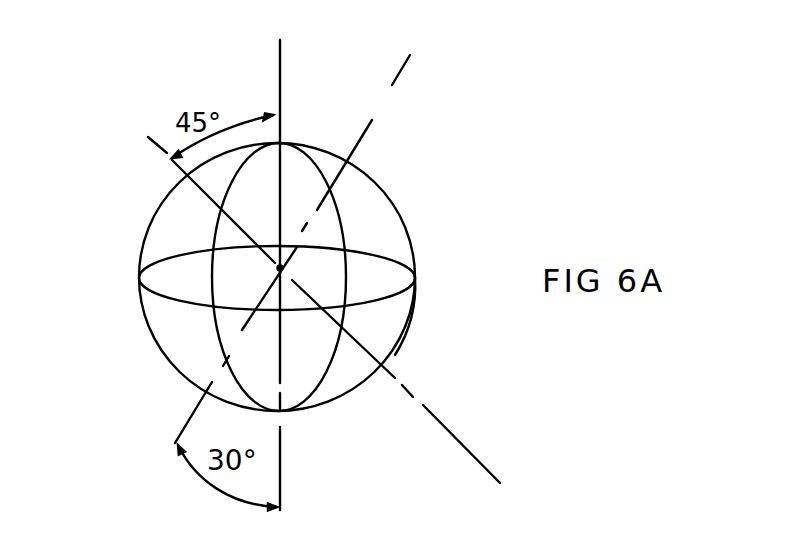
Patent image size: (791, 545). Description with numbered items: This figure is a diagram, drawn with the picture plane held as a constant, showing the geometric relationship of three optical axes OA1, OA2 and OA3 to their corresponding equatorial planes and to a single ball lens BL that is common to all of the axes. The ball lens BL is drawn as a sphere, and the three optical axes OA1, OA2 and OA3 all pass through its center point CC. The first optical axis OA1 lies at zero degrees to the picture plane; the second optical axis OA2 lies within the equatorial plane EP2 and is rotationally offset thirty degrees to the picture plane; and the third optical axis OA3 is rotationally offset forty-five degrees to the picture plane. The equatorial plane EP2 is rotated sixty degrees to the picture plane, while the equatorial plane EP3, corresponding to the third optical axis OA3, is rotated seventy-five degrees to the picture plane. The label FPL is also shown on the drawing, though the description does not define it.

The first optical axis OA1 is at (277, 100).
The second optical axis OA2 is at (383, 106).
The third optical axis OA3 is at (462, 447).
The second equatorial plane EP2 is at (297, 170).
The third equatorial plane EP3 is at (383, 278).
The ball lens BL is at (327, 263).
The focal plane location FPL is at (385, 232).
The center point CC is at (280, 268).